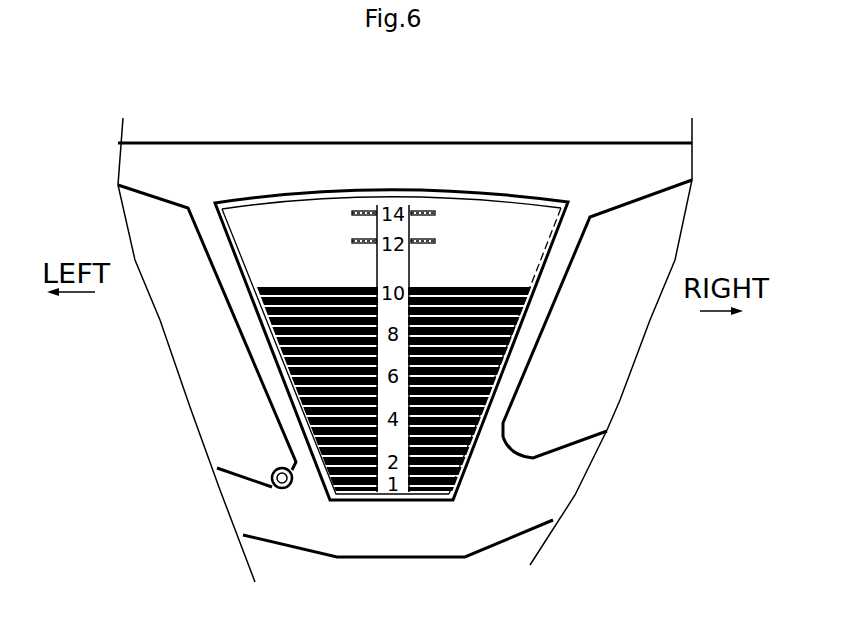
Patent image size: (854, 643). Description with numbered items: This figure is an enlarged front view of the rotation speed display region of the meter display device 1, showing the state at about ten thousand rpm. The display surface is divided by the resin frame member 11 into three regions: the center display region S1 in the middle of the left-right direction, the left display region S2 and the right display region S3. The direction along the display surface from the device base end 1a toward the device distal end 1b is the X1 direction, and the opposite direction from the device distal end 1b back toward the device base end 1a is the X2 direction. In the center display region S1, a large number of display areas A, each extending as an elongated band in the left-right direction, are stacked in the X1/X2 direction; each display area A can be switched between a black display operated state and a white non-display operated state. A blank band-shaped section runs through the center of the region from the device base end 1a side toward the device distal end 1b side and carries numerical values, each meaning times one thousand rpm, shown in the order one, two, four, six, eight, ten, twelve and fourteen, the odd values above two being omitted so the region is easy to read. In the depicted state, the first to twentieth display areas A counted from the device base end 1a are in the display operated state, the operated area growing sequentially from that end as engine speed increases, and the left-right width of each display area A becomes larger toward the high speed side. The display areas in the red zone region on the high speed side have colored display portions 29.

The meter display device 1 is at (578, 119).
The device base end 1a is at (385, 562).
The device distal end 1b is at (399, 141).
The frame member 11 is at (178, 165).
The colored display portions 29 is at (353, 241).
The center display region S1 is at (464, 216).
The left display region S2 is at (228, 351).
The right display region S3 is at (616, 351).
The display areas A is at (350, 470).
The X1 direction X1 is at (508, 236).
The X2 direction X2 is at (265, 228).